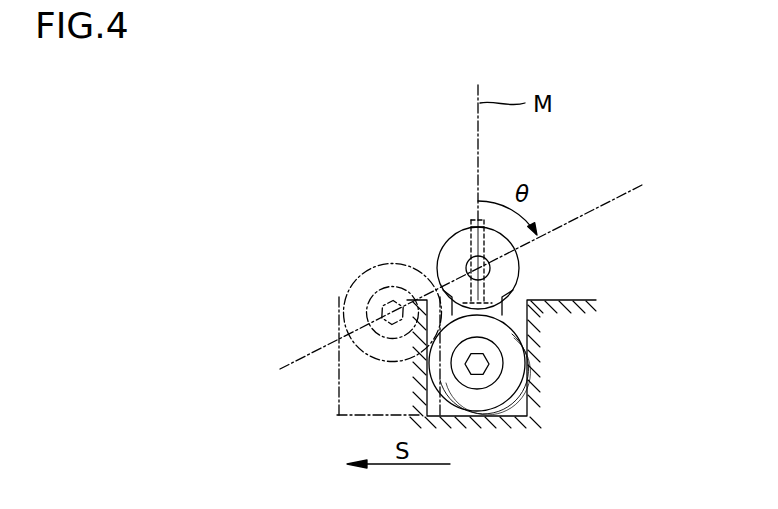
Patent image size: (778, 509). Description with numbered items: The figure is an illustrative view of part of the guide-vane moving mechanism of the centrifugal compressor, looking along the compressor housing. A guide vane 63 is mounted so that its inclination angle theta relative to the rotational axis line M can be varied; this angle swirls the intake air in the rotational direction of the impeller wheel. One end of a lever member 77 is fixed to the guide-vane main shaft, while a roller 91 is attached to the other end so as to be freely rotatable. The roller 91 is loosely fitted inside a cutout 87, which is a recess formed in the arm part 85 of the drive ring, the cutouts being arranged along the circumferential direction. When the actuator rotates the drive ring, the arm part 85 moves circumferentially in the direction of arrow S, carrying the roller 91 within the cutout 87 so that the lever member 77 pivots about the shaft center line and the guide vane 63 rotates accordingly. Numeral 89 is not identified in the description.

The guide vane 63 is at (470, 229).
The lever member 77 is at (505, 306).
The arm part 85 is at (540, 397).
The cutout 87 is at (476, 421).
The roller 89 is at (492, 355).
The roller 91 is at (507, 380).